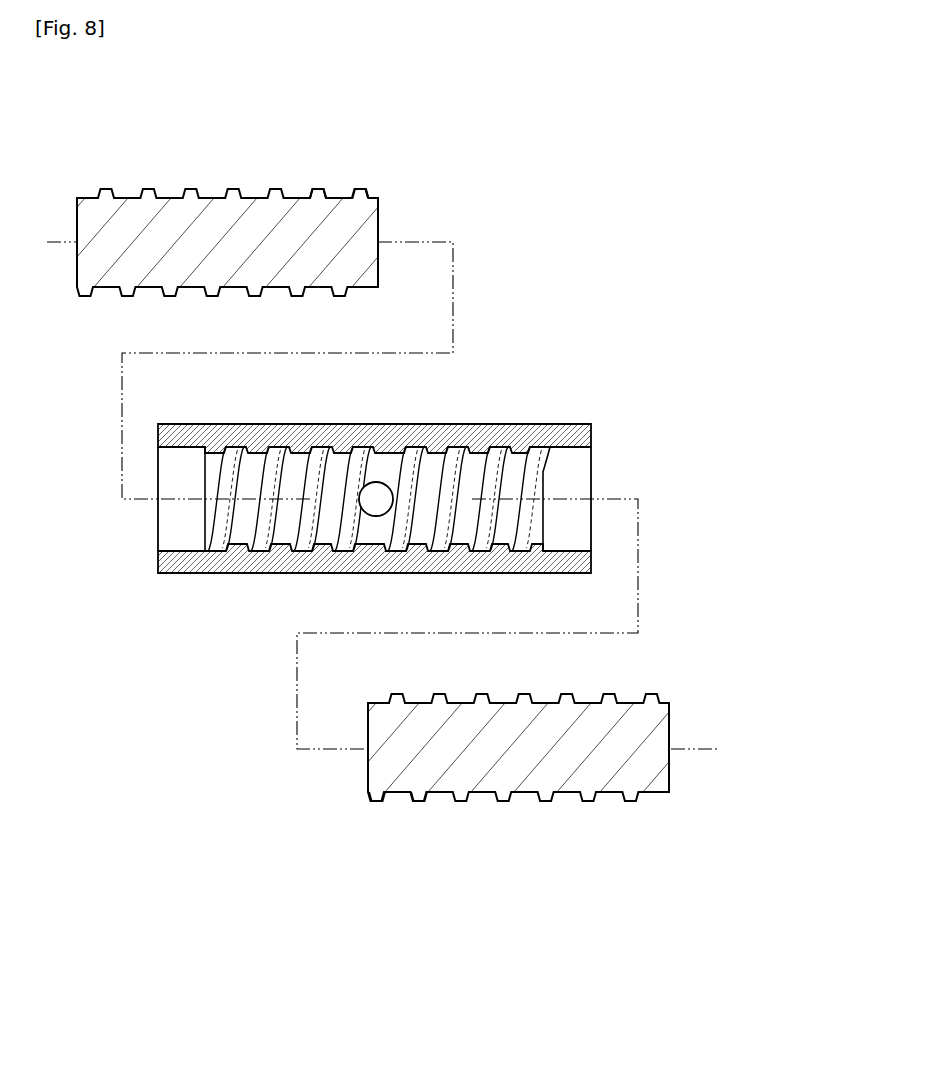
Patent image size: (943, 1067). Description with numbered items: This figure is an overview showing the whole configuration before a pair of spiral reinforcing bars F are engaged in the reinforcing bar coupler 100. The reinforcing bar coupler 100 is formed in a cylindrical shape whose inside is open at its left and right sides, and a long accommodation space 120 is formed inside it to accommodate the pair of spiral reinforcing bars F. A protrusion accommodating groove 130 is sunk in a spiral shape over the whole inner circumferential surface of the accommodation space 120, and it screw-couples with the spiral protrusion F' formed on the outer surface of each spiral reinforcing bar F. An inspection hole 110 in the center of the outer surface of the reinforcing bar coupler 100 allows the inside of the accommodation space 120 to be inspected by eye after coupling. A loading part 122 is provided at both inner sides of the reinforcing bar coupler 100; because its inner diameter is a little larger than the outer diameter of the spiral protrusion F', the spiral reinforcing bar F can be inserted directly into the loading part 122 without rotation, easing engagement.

The reinforcing bar coupler 100 is at (339, 485).
The inspection hole 110 is at (384, 478).
The accommodation space 120 is at (287, 533).
The loading part 122 is at (178, 532).
The protrusion accommodating groove 130 is at (275, 452).
The spiral reinforcing bar F is at (373, 484).
The spiral protrusion F' is at (368, 488).